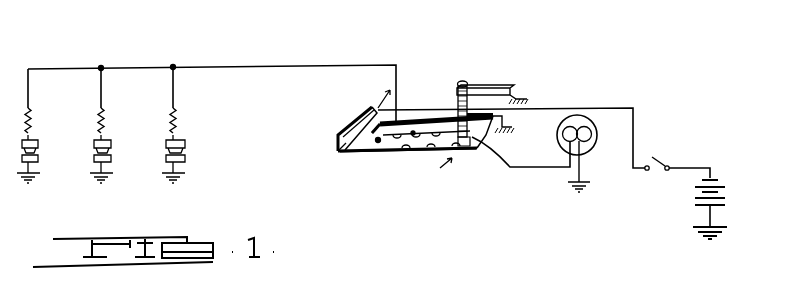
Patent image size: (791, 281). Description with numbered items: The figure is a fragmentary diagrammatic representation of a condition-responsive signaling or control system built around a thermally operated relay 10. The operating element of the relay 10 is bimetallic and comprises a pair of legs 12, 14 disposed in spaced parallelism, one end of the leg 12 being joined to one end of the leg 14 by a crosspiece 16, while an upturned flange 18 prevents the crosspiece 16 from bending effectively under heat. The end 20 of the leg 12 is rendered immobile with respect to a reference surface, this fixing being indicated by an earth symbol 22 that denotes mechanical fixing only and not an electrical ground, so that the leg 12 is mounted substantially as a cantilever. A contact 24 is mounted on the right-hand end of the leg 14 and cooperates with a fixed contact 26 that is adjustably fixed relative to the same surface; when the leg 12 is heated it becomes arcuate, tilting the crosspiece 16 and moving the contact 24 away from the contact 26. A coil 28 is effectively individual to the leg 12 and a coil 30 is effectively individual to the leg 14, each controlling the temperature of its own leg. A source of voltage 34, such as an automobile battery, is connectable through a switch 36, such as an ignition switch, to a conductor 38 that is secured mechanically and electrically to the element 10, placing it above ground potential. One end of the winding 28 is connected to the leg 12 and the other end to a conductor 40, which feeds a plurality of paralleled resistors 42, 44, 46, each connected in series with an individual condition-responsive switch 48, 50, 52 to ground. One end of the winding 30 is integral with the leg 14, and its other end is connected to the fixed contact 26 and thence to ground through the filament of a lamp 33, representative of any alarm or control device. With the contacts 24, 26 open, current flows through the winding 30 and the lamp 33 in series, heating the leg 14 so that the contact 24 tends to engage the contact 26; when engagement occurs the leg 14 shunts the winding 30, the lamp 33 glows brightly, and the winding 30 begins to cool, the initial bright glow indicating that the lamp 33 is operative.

The relay 10 is at (387, 129).
The leg 12 is at (439, 110).
The leg 14 is at (408, 152).
The crosspiece 16 is at (360, 112).
The upturned flange 18 is at (342, 130).
The end of leg 20 is at (487, 90).
The earth symbol 22 is at (510, 125).
The contact 24 is at (469, 151).
The fixed contact 26 is at (465, 136).
The coil 28 is at (413, 121).
The coil 30 is at (402, 146).
The lamp 33 is at (593, 150).
The source of voltage 34 is at (740, 148).
The switch 36 is at (653, 157).
The conductor 38 is at (572, 107).
The conductor 40 is at (270, 65).
The resistor 42 is at (29, 117).
The resistor 44 is at (103, 117).
The resistor 46 is at (176, 117).
The condition-responsive switch 48 is at (39, 145).
The condition-responsive switch 50 is at (136, 131).
The condition-responsive switch 52 is at (186, 147).